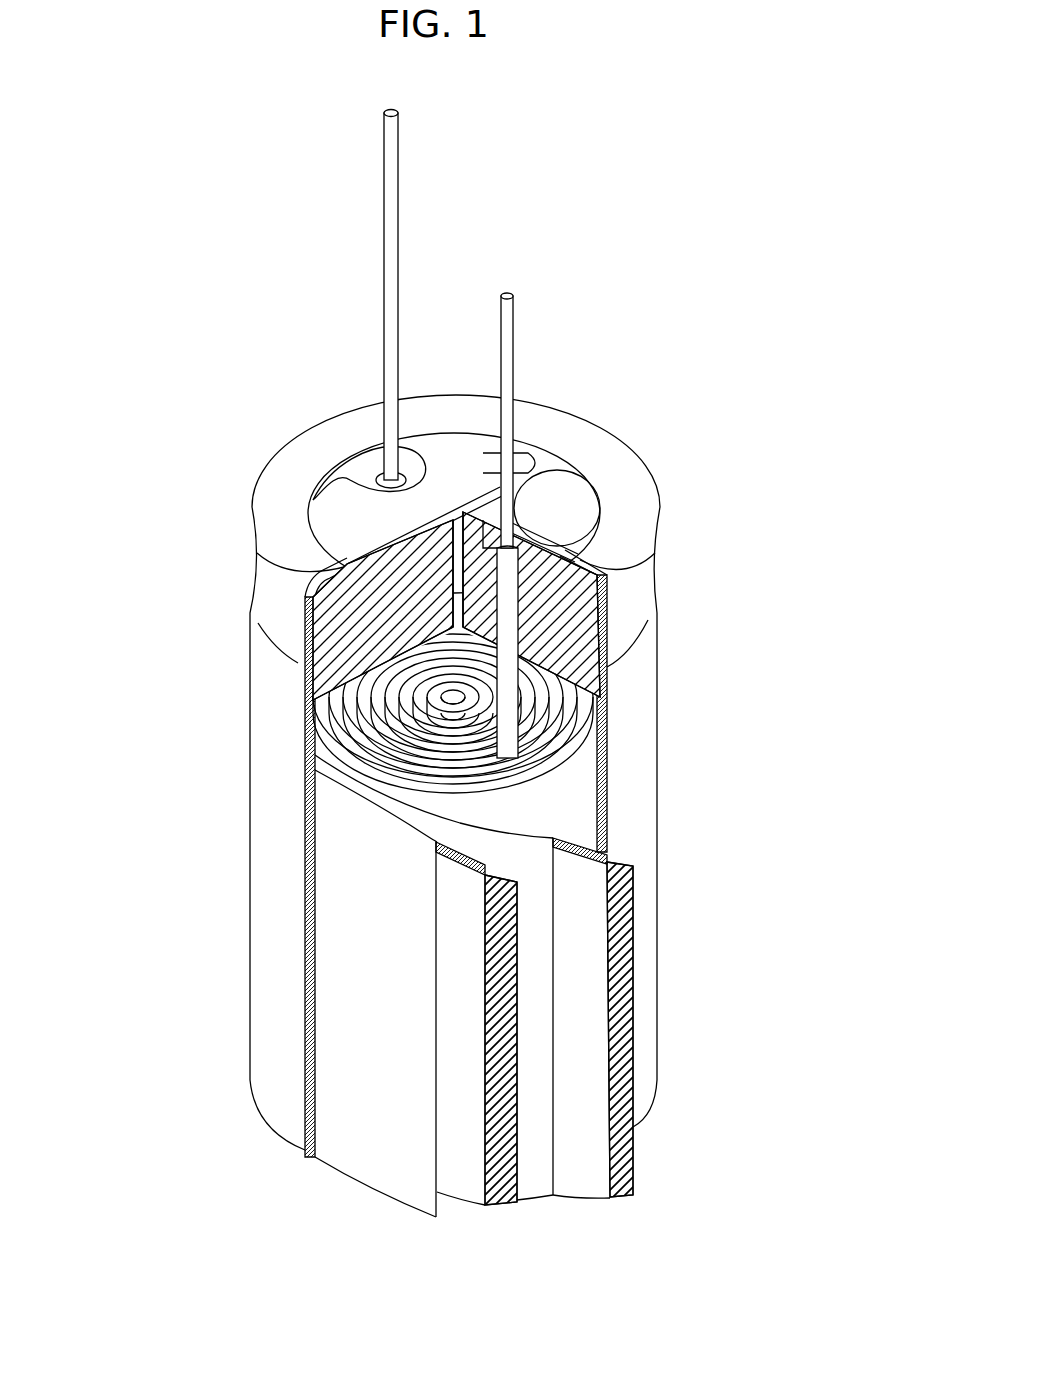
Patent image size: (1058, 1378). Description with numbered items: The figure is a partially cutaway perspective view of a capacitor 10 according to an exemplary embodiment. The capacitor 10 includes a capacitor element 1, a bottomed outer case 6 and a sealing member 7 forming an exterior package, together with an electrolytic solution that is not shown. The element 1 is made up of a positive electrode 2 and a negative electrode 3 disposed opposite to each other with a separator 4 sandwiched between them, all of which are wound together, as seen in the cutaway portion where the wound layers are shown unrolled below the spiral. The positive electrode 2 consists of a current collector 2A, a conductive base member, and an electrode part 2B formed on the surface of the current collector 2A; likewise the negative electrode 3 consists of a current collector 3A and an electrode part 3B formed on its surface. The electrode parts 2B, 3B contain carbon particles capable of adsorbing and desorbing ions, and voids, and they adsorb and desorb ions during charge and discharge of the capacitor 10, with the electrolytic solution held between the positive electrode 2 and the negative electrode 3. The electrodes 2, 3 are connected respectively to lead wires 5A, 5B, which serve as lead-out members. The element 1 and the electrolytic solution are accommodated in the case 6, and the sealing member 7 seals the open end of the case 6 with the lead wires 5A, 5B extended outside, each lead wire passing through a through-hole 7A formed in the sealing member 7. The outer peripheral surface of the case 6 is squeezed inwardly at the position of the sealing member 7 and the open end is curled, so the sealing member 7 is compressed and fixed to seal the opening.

The capacitor 10 is at (648, 193).
The capacitor element 1 is at (781, 912).
The positive electrode 2 is at (735, 893).
The current collector 2A is at (617, 898).
The electrode part 2B is at (595, 948).
The negative electrode 3 is at (735, 1027).
The current collector 3A is at (517, 1008).
The electrode part 3B is at (467, 1046).
The separator 4 is at (395, 1178).
The lead wire 5A is at (398, 193).
The lead wire 5B is at (514, 320).
The bottomed outer case 6 is at (648, 653).
The sealing member 7 is at (340, 622).
The through-hole 7A is at (533, 600).